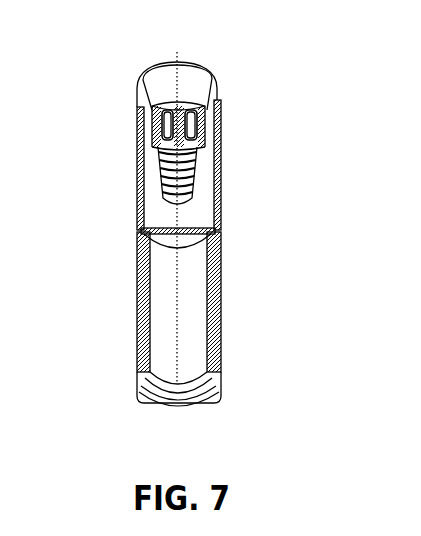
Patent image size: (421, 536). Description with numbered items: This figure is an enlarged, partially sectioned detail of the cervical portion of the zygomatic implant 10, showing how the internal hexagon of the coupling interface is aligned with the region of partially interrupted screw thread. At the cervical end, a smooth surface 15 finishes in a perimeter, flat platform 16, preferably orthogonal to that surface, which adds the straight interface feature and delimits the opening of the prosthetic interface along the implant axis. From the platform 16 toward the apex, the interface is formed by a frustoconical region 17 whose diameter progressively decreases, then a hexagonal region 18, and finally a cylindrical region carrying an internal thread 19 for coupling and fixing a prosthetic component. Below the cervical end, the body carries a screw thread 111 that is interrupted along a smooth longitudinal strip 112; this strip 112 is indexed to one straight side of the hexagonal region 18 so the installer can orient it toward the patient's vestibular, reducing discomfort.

The zygomatic implant 10 is at (256, 255).
The smooth surface 15 is at (223, 102).
The platform 16 is at (223, 75).
The frustoconical region 17 is at (170, 82).
The hexagonal region 18 is at (193, 133).
The internal thread 19 is at (146, 181).
The screw thread 111 is at (137, 352).
The longitudinal strip 112 is at (190, 312).